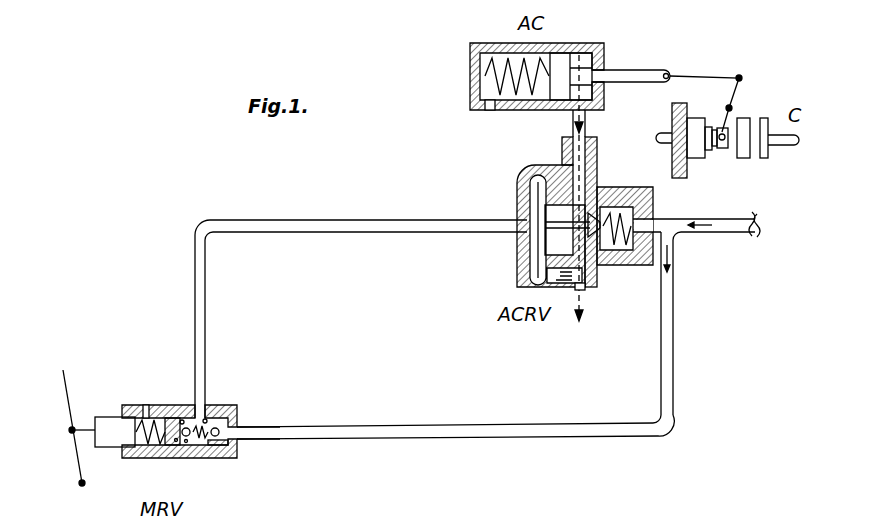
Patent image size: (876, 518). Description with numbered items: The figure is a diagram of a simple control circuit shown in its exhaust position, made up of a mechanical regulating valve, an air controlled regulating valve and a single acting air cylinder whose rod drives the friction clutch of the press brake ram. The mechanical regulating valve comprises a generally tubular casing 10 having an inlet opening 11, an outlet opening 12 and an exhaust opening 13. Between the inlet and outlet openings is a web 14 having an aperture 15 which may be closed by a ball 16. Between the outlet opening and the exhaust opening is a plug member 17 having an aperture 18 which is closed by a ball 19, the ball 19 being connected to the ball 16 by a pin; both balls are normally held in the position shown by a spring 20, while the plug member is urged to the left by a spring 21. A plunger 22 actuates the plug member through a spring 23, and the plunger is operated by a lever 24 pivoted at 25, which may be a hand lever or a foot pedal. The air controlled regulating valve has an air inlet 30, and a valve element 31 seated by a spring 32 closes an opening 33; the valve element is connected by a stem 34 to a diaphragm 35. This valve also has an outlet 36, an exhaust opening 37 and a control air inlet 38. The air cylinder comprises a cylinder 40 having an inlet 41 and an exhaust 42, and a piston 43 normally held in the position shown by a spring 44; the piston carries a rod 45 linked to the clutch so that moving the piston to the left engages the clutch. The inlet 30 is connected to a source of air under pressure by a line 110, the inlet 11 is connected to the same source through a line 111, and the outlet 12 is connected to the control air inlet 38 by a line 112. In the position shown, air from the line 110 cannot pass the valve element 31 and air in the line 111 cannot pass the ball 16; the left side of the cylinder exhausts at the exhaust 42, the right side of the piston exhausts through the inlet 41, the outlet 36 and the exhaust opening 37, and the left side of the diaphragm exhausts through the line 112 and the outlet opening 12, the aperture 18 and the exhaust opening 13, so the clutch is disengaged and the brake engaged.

The tubular casing 10 is at (214, 456).
The inlet opening 11 is at (275, 428).
The outlet opening 12 is at (201, 412).
The exhaust opening 13 is at (146, 414).
The web 14 is at (240, 444).
The aperture 15 is at (221, 422).
The ball 16 is at (236, 426).
The plug member 17 is at (173, 446).
The aperture 18 is at (166, 444).
The ball 19 is at (181, 416).
The spring 20 is at (216, 417).
The spring 21 is at (188, 448).
The plunger 22 is at (106, 448).
The spring 23 is at (136, 416).
The lever 24 is at (62, 389).
The pivot 25 is at (82, 483).
The air inlet 30 is at (653, 217).
The valve element 31 is at (608, 210).
The spring 32 is at (614, 253).
The opening 33 is at (590, 215).
The stem 34 is at (573, 240).
The diaphragm 35 is at (540, 200).
The outlet 36 is at (572, 134).
The exhaust opening 37 is at (585, 292).
The control air inlet 38 is at (516, 238).
The cylinder 40 is at (497, 45).
The inlet 41 is at (596, 113).
The exhaust 42 is at (490, 111).
The piston 43 is at (558, 56).
The spring 44 is at (490, 75).
The rod 45 is at (606, 72).
The line 110 is at (748, 234).
The line 111 is at (398, 427).
The line 112 is at (376, 233).